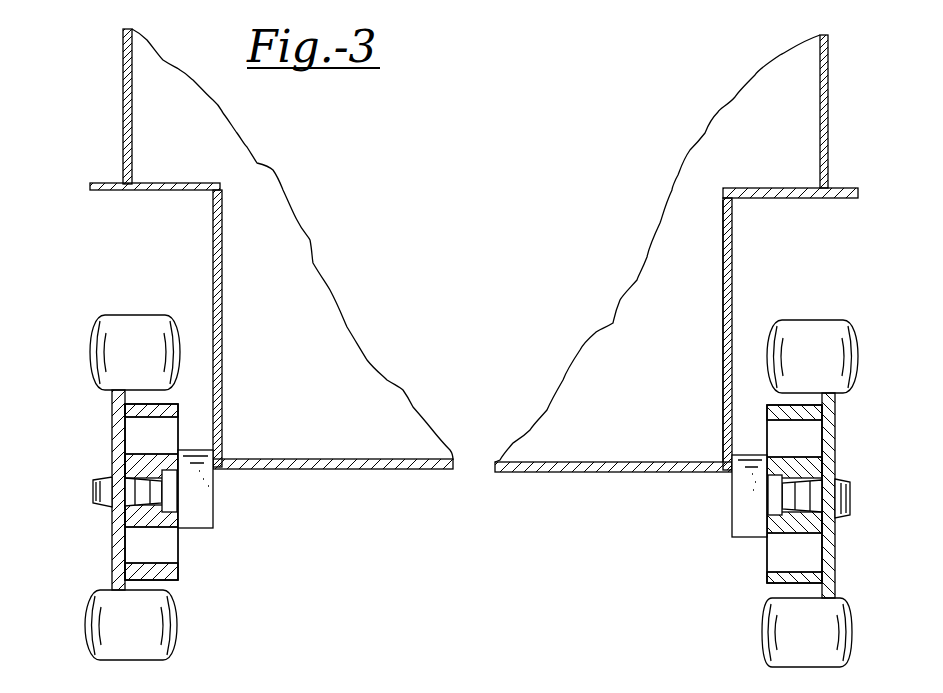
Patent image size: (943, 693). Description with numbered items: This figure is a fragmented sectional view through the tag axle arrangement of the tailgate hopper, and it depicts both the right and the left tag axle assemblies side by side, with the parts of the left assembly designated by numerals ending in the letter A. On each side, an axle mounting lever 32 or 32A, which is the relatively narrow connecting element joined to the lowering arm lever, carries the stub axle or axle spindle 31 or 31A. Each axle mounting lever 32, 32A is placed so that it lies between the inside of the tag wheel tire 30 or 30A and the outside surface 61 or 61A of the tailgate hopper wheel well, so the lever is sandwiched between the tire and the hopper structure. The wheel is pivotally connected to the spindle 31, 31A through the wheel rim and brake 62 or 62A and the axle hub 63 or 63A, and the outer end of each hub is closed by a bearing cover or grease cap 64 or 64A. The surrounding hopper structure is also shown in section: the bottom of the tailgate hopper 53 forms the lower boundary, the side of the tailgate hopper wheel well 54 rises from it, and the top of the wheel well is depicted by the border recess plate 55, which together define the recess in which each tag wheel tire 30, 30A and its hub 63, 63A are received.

The tag wheel tire 30 is at (817, 317).
The tag wheel tire 30A is at (92, 347).
The axle spindle 31 is at (767, 510).
The axle spindle 31A is at (178, 502).
The axle mounting lever 32 is at (728, 508).
The axle mounting lever 32A is at (215, 495).
The bottom of the tailgate hopper 53 is at (568, 462).
The side of the tailgate hopper wheel well 54 is at (723, 238).
The border recess plate 55 is at (758, 188).
The outside surface of the tailgate hopper wheel well 61 is at (732, 287).
The outside surface of the tailgate hopper wheel well 61A is at (213, 282).
The wheel rim and brake 62 is at (837, 585).
The wheel rim and brake 62A is at (110, 580).
The axle hub 63 is at (803, 462).
The axle hub 63A is at (124, 444).
The bearing cover 64 is at (853, 502).
The bearing cover 64A is at (92, 495).